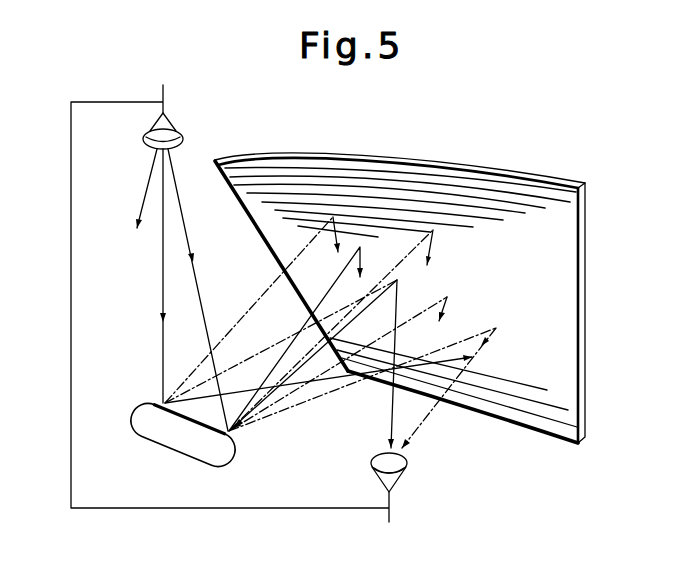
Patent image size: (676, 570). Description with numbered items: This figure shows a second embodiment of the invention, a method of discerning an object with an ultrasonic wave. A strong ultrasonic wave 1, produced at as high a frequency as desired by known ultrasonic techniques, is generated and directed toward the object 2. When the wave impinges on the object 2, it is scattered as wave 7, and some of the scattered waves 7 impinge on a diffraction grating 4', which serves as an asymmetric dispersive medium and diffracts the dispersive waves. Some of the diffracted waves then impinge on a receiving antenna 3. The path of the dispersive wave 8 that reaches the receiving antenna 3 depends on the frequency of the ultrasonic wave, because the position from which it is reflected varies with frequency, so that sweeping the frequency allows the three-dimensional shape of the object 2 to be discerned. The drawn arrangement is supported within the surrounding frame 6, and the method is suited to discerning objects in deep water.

The ultrasonic wave 1 is at (163, 198).
The object 2 is at (175, 438).
The receiving antenna 3 is at (400, 480).
The diffraction grating 4' is at (400, 273).
The frame / housing 6 is at (198, 510).
The scattered wave 7 is at (257, 305).
The reflected beam to detector 8 is at (390, 420).